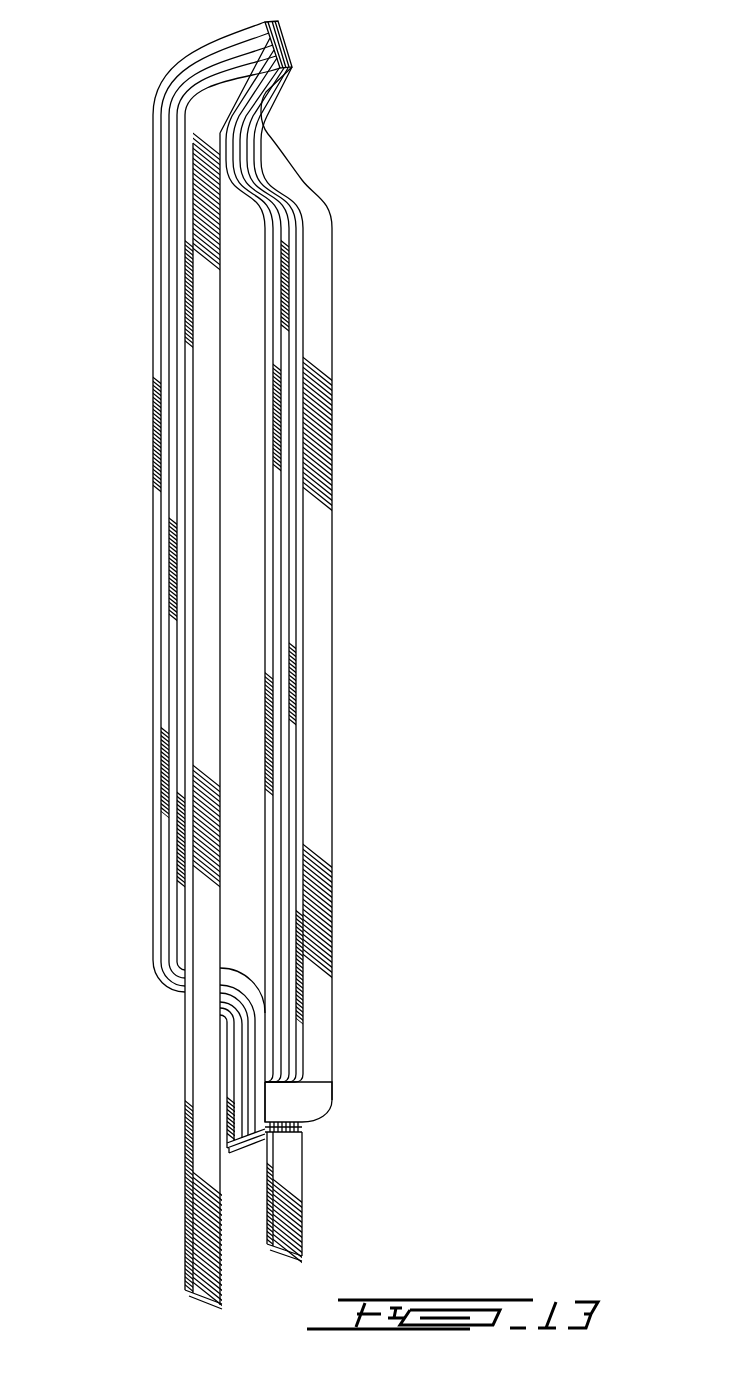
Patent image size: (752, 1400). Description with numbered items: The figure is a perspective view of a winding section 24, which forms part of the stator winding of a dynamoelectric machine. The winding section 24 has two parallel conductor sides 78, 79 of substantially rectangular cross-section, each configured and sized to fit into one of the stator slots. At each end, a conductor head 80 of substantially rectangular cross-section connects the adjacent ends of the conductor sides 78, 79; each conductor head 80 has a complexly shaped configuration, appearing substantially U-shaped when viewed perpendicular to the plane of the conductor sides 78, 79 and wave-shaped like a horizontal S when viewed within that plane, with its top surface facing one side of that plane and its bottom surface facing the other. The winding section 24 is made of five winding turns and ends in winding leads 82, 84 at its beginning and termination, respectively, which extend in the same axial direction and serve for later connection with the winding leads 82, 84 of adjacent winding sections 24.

The winding section 24 is at (280, 655).
The conductor side 78 is at (206, 556).
The conductor side 79 is at (320, 643).
The conductor head 80 is at (260, 58).
The winding lead 82 is at (190, 1222).
The winding lead 84 is at (290, 1222).